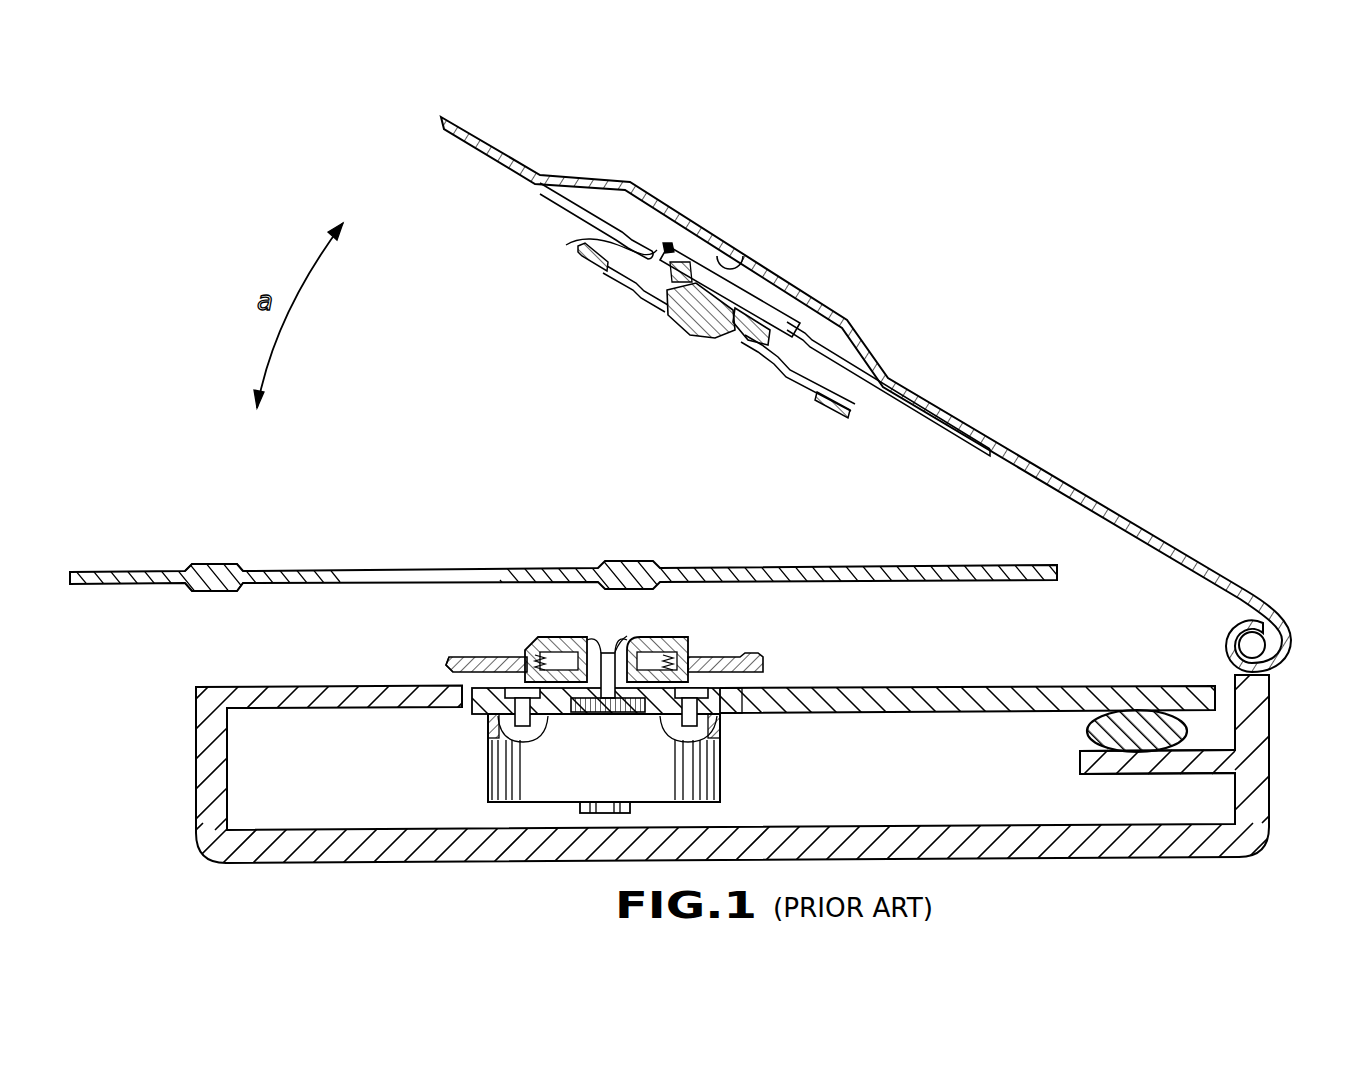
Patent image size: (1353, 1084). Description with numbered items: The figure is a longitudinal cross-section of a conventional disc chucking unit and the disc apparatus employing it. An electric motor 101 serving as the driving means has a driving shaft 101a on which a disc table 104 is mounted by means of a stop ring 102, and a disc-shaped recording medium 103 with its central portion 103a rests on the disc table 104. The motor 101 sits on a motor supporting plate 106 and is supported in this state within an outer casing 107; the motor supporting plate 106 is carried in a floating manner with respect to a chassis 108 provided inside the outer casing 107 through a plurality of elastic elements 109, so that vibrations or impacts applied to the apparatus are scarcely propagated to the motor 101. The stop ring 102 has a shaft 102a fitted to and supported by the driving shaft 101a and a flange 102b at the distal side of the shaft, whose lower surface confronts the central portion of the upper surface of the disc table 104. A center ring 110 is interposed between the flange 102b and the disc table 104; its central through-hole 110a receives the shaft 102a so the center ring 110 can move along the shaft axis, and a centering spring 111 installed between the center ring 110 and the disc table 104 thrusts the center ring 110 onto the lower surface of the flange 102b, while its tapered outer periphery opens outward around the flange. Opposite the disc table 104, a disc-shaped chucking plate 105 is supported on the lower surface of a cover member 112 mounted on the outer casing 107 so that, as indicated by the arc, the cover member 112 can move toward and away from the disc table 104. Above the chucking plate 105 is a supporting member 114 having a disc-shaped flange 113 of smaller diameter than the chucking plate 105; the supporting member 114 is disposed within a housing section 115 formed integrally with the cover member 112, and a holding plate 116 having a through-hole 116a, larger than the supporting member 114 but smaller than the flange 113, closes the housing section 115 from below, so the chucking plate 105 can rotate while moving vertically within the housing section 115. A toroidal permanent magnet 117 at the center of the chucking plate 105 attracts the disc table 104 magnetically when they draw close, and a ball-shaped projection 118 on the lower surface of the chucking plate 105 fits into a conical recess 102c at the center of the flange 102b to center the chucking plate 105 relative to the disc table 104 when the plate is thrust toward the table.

The electric motor 101 is at (705, 779).
The driving shaft 101a is at (628, 636).
The stop ring 102 is at (664, 634).
The shaft 102a is at (637, 697).
The flange 102b is at (590, 640).
The conical recess 102c is at (598, 633).
The disc-shaped recording medium 103 is at (112, 580).
The disk hub 103a is at (341, 569).
The disc table 104 is at (765, 660).
The chucking plate 105 is at (790, 368).
The motor supporting plate 106 is at (963, 695).
The outer casing 107 is at (1242, 770).
The chassis 108 is at (1108, 770).
The elastic elements 109 is at (1142, 717).
The center ring 110 is at (528, 635).
The central through-hole 110a is at (527, 636).
The centering spring 111 is at (750, 713).
The cover member 112 is at (1083, 492).
The disc-shaped flange 113 is at (803, 322).
The supporting member 114 is at (665, 247).
The housing section 115 is at (730, 254).
The holding plate 116 is at (563, 202).
The through-hole 116a is at (582, 243).
The permanent magnet 117 is at (757, 347).
The ball-shaped projection 118 is at (697, 335).